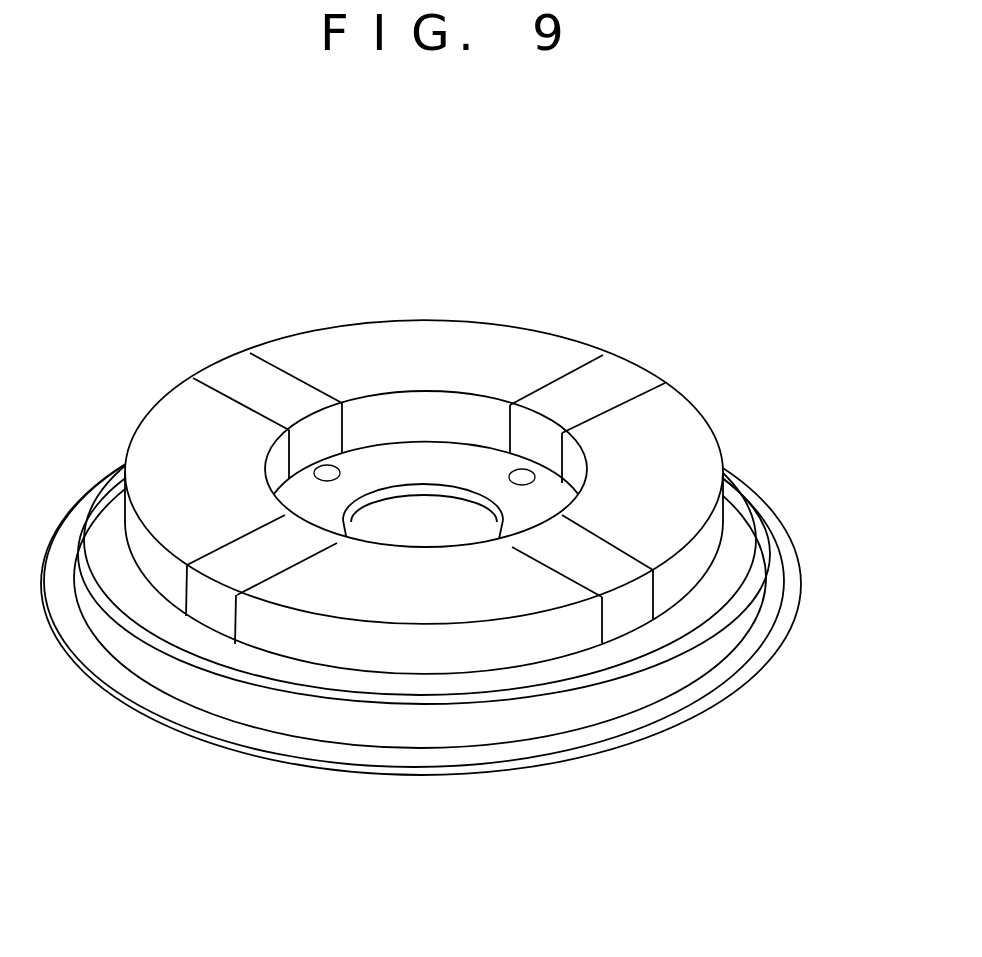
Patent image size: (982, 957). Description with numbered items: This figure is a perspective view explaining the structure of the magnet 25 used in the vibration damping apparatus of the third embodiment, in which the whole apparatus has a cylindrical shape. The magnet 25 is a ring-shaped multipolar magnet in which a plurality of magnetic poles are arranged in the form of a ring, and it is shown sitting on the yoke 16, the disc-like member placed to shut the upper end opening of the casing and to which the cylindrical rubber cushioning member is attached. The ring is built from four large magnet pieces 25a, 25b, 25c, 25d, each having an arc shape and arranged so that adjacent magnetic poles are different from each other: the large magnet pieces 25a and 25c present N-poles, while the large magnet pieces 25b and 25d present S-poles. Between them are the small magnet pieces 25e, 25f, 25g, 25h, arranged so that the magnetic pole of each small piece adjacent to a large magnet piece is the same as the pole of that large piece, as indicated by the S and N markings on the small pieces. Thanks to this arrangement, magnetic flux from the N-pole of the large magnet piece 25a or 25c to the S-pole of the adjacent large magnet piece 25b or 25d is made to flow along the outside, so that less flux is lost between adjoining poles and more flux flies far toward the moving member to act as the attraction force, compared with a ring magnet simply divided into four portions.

The yoke 16 is at (563, 758).
The magnet 25 is at (548, 292).
The large magnet piece 25a is at (339, 328).
The large magnet piece 25b is at (162, 417).
The large magnet piece 25c is at (325, 648).
The large magnet piece 25d is at (707, 537).
The small magnet piece 25e is at (238, 373).
The small magnet piece 25f is at (205, 615).
The small magnet piece 25g is at (637, 623).
The small magnet piece 25h is at (633, 370).